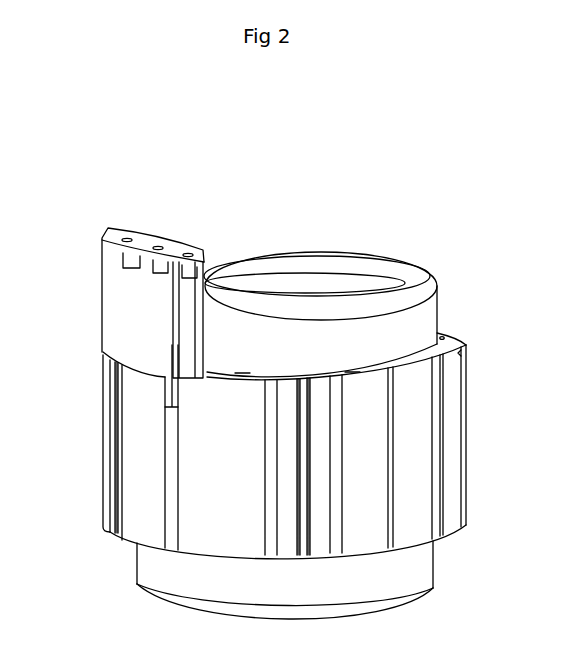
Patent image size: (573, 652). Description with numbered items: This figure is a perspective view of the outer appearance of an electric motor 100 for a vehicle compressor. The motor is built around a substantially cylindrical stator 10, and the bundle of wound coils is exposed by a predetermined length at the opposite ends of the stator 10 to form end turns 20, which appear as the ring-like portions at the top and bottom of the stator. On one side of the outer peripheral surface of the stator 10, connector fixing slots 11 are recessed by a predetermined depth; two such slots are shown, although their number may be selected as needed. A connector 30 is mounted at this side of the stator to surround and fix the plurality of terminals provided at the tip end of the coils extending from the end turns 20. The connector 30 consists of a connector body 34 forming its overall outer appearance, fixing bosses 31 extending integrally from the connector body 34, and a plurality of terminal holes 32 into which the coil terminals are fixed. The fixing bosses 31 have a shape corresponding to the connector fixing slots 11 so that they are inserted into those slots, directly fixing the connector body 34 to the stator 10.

The electric motor 100 is at (418, 168).
The stator 10 is at (450, 453).
The connector fixing slot 11 is at (112, 462).
The end turn 20 is at (415, 327).
The connector 30 is at (92, 272).
The fixing boss 31 is at (163, 385).
The terminal hole 32 is at (188, 253).
The connector body 34 is at (120, 308).